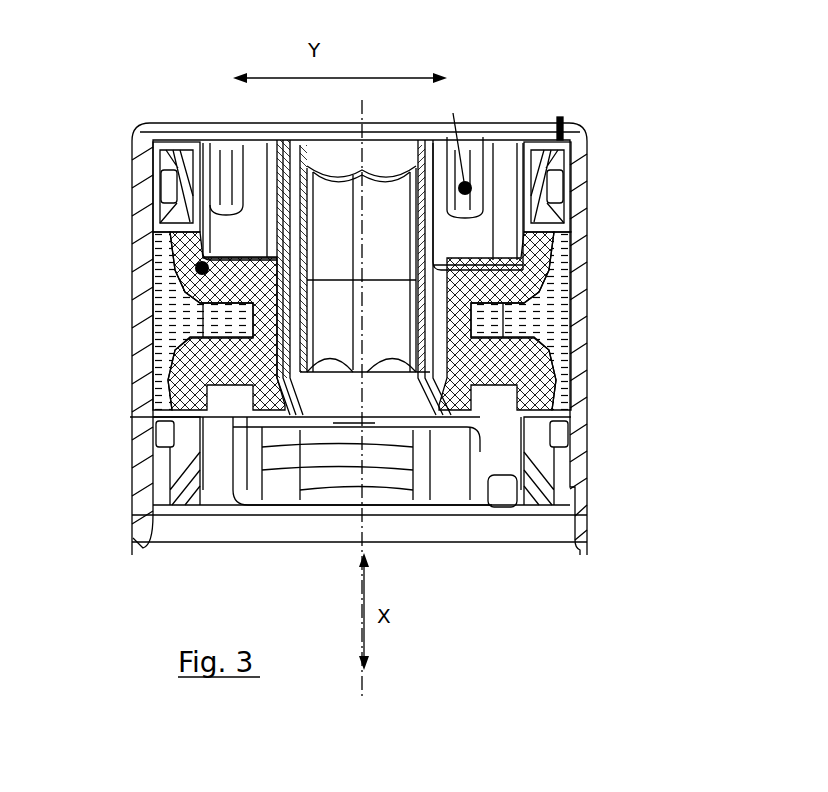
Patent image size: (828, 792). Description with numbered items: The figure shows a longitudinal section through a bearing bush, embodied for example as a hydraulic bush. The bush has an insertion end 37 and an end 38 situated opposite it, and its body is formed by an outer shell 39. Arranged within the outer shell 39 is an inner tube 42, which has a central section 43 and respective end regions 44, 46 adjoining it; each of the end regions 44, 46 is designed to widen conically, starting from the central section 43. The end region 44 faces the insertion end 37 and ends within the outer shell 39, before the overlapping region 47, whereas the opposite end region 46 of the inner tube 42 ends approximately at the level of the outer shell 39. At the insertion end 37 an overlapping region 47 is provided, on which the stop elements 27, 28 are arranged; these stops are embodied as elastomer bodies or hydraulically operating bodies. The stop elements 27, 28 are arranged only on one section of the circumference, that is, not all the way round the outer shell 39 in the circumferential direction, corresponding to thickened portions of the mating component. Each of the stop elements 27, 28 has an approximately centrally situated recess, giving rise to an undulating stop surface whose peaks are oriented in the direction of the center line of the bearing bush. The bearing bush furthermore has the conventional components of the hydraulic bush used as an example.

The stop element 27 is at (499, 488).
The stop element 28 is at (221, 486).
The insertion end 37 is at (328, 590).
The end 38 is at (505, 80).
The outer shell 39 is at (589, 449).
The inner tube 42 is at (557, 230).
The central section 43 is at (283, 263).
The end region 44 is at (277, 402).
The end region 46 is at (282, 155).
The overlapping region 47 is at (273, 523).